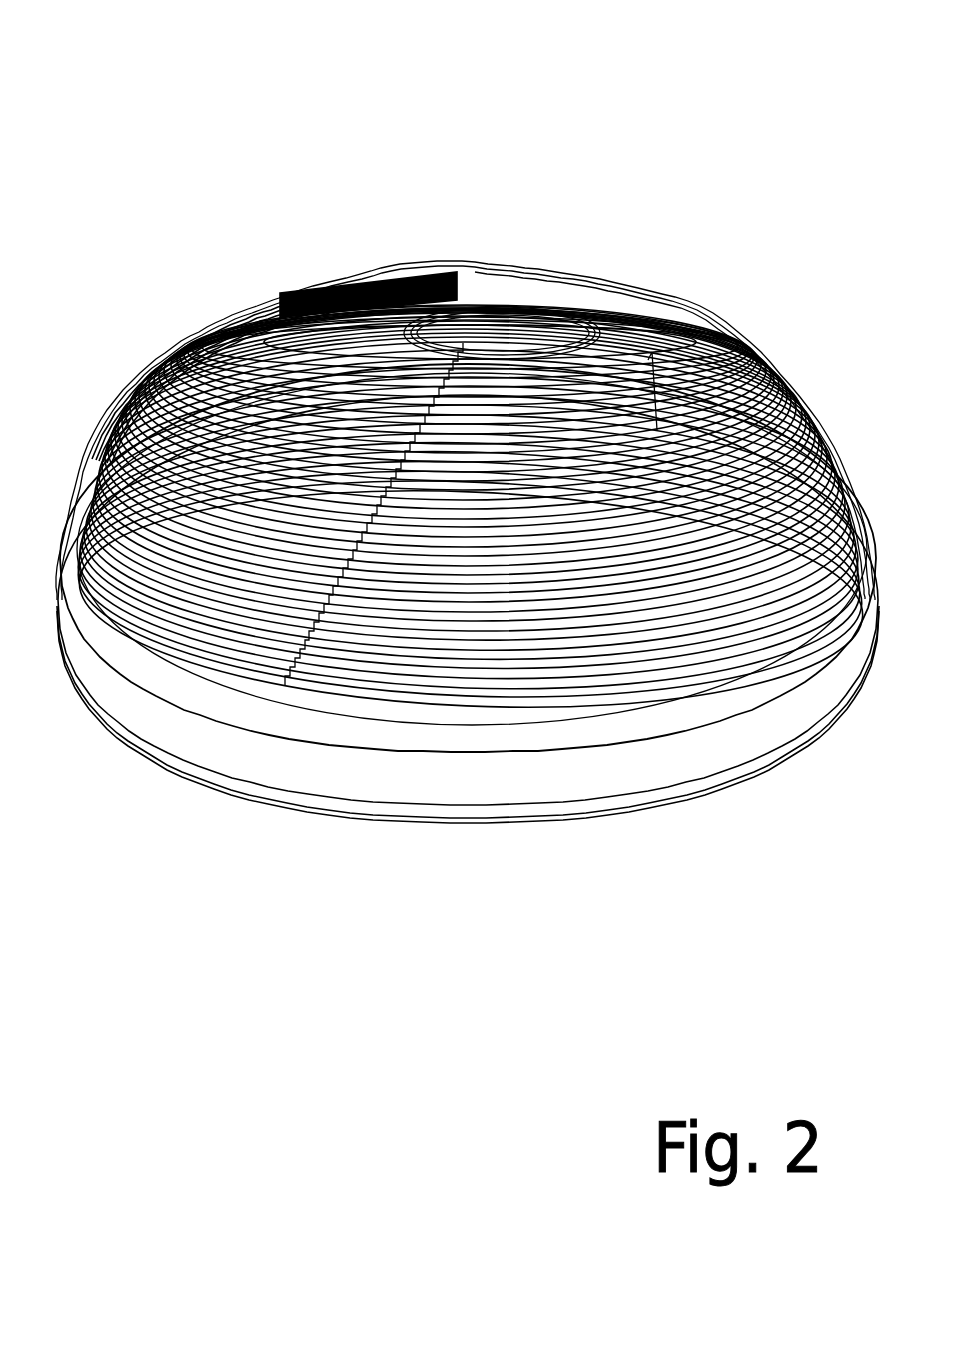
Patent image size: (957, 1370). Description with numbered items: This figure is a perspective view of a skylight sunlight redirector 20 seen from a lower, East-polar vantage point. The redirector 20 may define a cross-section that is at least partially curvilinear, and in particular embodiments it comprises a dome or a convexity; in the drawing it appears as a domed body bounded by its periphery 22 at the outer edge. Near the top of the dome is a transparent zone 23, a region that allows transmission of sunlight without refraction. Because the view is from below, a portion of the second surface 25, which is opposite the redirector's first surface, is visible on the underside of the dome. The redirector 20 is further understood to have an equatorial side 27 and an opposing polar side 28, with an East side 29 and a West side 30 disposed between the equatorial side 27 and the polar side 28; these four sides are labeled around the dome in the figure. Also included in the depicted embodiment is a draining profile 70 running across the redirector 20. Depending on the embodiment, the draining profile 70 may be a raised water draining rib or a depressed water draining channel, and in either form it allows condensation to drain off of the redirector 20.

The redirector 20 is at (201, 53).
The periphery 22 is at (290, 800).
The transparent zone 23 is at (535, 297).
The second surface 25 is at (445, 605).
The equatorial side 27 is at (270, 706).
The polar side 28 is at (690, 333).
The East side 29 is at (150, 385).
The West side 30 is at (722, 740).
The draining profile 70 is at (273, 653).